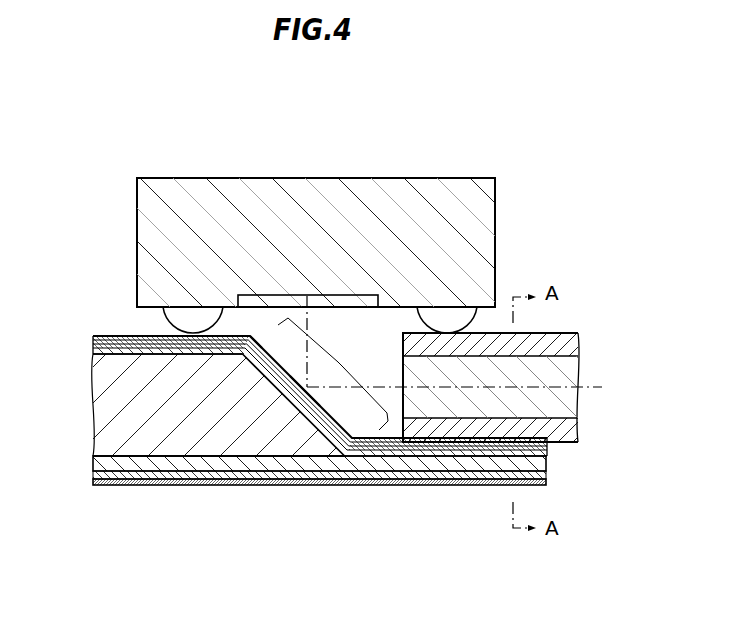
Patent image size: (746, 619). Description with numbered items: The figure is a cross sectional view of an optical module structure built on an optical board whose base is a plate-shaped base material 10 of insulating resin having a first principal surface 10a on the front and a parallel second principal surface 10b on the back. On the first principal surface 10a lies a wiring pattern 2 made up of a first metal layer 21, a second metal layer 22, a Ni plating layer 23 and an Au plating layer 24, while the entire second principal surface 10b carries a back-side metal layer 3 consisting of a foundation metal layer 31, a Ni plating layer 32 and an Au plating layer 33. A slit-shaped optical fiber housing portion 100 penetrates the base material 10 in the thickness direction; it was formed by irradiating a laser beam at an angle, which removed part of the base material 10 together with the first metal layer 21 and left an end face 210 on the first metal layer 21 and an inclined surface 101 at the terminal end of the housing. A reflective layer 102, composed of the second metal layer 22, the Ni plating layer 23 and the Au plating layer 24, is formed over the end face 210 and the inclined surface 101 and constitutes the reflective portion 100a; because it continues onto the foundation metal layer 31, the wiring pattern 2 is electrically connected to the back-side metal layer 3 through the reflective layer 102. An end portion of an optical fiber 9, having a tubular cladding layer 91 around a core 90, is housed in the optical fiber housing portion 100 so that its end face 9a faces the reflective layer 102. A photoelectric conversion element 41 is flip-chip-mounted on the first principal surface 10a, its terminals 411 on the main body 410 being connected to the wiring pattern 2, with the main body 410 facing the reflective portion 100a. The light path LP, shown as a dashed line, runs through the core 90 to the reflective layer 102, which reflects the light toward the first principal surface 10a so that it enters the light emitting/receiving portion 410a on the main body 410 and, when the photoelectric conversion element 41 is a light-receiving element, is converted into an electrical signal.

The wiring pattern 2 is at (277, 373).
The back-side metal layer 3 is at (277, 475).
The optical fiber 9 is at (482, 432).
The end face 9a is at (403, 418).
The base material 10 is at (190, 405).
The first principal surface 10a is at (122, 362).
The second principal surface 10b is at (128, 458).
The first metal layer 21 is at (291, 396).
The second metal layer 22 is at (92, 347).
The Ni plating layer 23 is at (92, 342).
The Au plating layer 24 is at (92, 337).
The foundation metal layer 31 is at (95, 467).
The Ni plating layer 32 is at (95, 476).
The Au plating layer 33 is at (95, 484).
The photoelectric conversion element 41 is at (331, 202).
The core 90 is at (565, 380).
The cladding layer 91 is at (565, 340).
The optical fiber housing portion 100 is at (314, 404).
The reflective portion 100a is at (362, 338).
The inclined surface 101 is at (310, 403).
The reflective layer 102 is at (333, 374).
The end face 210 is at (262, 362).
The main body 410 is at (488, 248).
The light emitting/receiving portion 410a is at (273, 300).
The terminal 411 is at (193, 317).
The light path LP is at (595, 388).